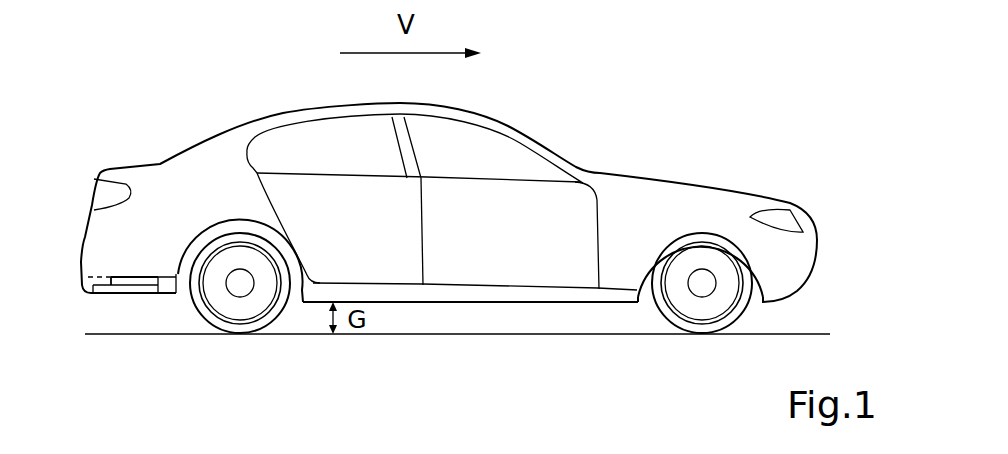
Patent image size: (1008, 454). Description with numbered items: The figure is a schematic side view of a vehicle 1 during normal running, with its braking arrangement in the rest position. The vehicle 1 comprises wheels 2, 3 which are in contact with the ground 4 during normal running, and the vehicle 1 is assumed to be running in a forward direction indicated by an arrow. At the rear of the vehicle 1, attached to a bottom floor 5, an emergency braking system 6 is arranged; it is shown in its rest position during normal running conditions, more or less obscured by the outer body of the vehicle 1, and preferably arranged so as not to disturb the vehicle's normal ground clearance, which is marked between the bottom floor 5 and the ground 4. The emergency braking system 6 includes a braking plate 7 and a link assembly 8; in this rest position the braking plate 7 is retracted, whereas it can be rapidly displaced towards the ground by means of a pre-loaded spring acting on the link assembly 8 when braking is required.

The vehicle 1 is at (612, 125).
The wheel 2 is at (245, 313).
The wheel 3 is at (698, 312).
The ground 4 is at (418, 335).
The bottom floor 5 is at (165, 275).
The emergency braking system 6 is at (99, 262).
The braking plate 7 is at (126, 298).
The link assembly 8 is at (138, 274).